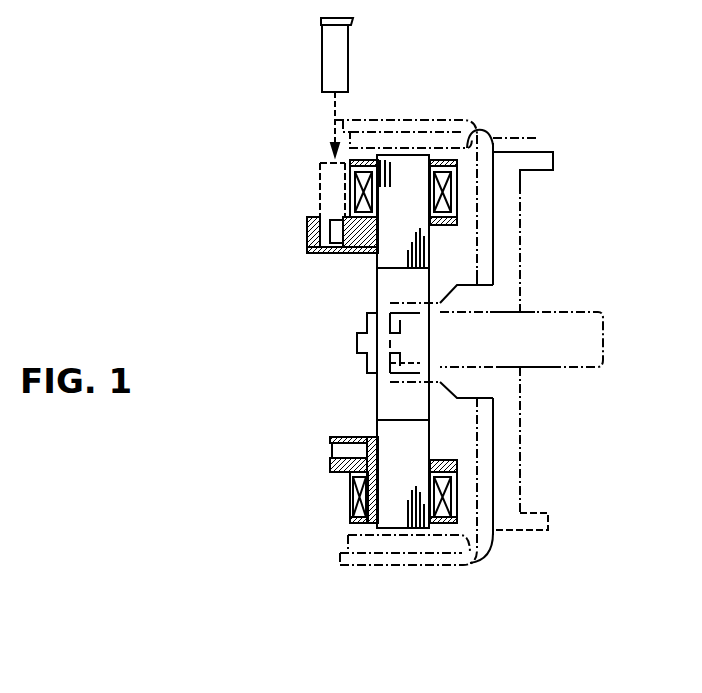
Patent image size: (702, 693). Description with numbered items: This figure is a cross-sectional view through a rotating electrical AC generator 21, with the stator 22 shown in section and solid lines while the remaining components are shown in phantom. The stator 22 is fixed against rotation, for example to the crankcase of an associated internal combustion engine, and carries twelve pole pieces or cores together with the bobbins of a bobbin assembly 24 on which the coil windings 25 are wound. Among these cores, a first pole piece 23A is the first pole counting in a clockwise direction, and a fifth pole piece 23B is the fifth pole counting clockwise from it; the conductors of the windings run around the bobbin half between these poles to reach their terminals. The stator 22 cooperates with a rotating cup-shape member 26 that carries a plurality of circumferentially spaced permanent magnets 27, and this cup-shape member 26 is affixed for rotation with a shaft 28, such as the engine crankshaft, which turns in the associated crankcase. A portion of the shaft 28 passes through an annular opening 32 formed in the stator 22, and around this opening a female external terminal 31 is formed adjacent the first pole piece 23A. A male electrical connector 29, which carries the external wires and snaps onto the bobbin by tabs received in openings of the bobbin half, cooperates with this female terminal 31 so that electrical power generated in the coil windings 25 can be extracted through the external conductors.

The rotating electrical AC generator 21 is at (320, 478).
The stator 22 is at (322, 465).
The first pole piece 23A is at (415, 157).
The fifth pole piece 23B is at (388, 512).
The bobbin assembly 24 is at (443, 453).
The coil windings 25 is at (457, 190).
The cup-shape member 26 is at (537, 136).
The permanent magnets 27 is at (463, 125).
The shaft 28 is at (573, 312).
The male electrical connector 29 is at (322, 42).
The female external terminal 31 is at (307, 226).
The annular opening 32 is at (377, 283).